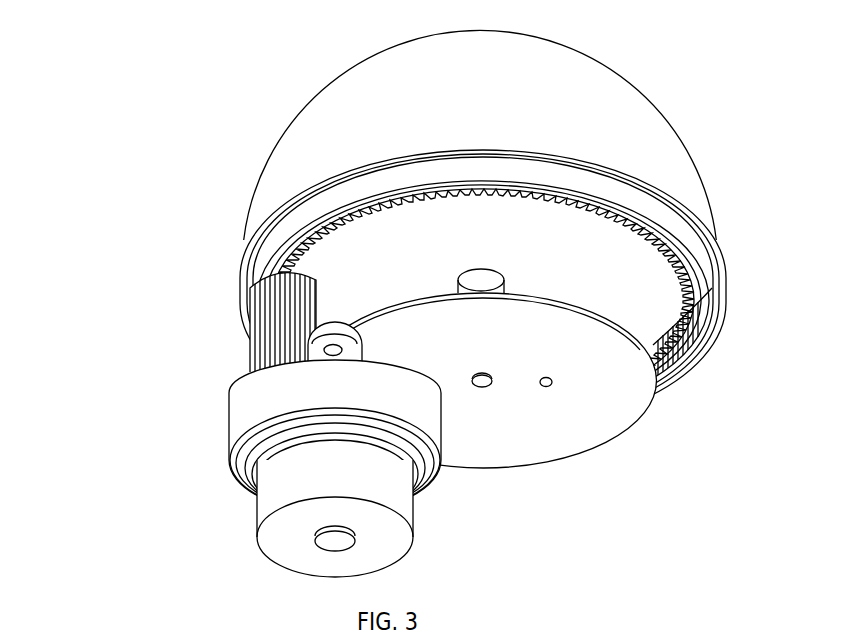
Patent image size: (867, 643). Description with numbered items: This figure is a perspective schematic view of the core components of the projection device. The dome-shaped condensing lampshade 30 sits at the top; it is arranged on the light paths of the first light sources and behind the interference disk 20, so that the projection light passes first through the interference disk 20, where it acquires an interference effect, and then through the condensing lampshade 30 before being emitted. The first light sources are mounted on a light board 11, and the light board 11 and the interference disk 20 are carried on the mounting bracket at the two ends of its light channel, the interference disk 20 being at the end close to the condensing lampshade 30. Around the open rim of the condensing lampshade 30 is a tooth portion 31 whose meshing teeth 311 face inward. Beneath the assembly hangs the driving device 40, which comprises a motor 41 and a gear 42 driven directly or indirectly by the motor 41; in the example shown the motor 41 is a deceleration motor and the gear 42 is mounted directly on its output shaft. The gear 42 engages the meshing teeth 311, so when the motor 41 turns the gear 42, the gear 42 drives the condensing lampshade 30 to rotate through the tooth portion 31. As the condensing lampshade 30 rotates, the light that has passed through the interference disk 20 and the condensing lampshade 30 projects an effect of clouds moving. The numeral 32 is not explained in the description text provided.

The light board 11 is at (540, 447).
The interference disk 20 is at (641, 272).
The condensing lampshade 30 is at (110, 66).
The tooth portion 31 is at (290, 217).
The meshing teeth 311 is at (660, 374).
The dome cover 32 is at (325, 112).
The driving device 40 is at (100, 307).
The motor 41 is at (272, 407).
The gear 42 is at (262, 306).